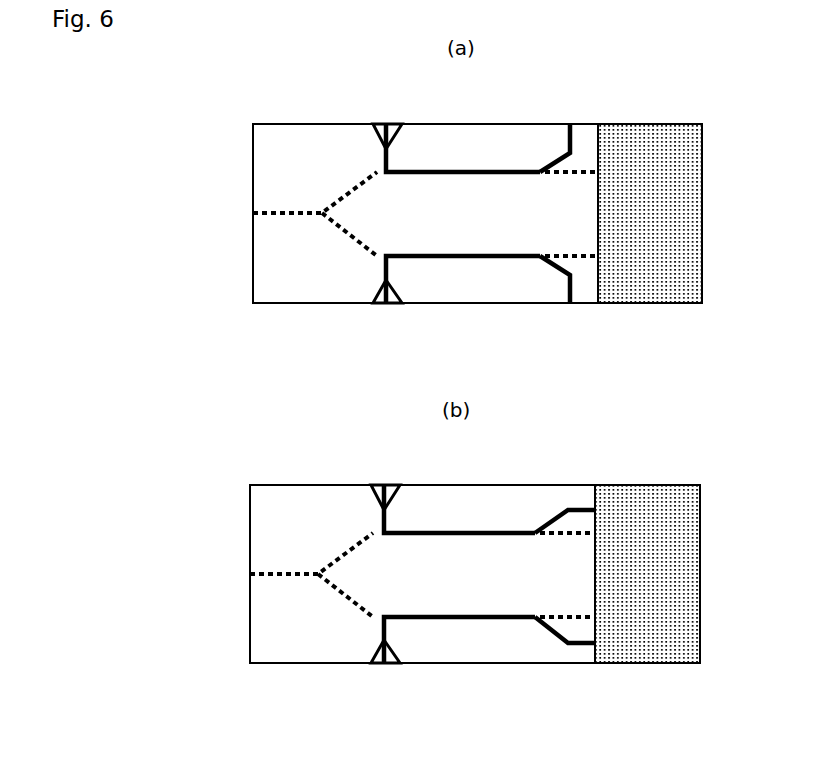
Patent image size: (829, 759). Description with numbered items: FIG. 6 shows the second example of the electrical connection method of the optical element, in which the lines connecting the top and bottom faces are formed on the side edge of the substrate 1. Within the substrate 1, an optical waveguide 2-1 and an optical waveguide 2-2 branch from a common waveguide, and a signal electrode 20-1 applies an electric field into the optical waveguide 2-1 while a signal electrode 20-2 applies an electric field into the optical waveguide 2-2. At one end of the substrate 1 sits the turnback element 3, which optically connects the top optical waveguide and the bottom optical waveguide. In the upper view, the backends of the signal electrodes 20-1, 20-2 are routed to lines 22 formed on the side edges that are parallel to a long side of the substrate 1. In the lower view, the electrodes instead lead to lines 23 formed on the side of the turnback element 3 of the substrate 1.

The substrate 1 is at (295, 166).
The optical waveguide 2-1 is at (350, 192).
The optical waveguide 2-2 is at (352, 240).
The signal electrode 20-1 is at (488, 171).
The signal electrode 20-2 is at (488, 258).
The lines 22 is at (572, 136).
The lines 23 is at (597, 509).
The turnback element 3 is at (660, 193).